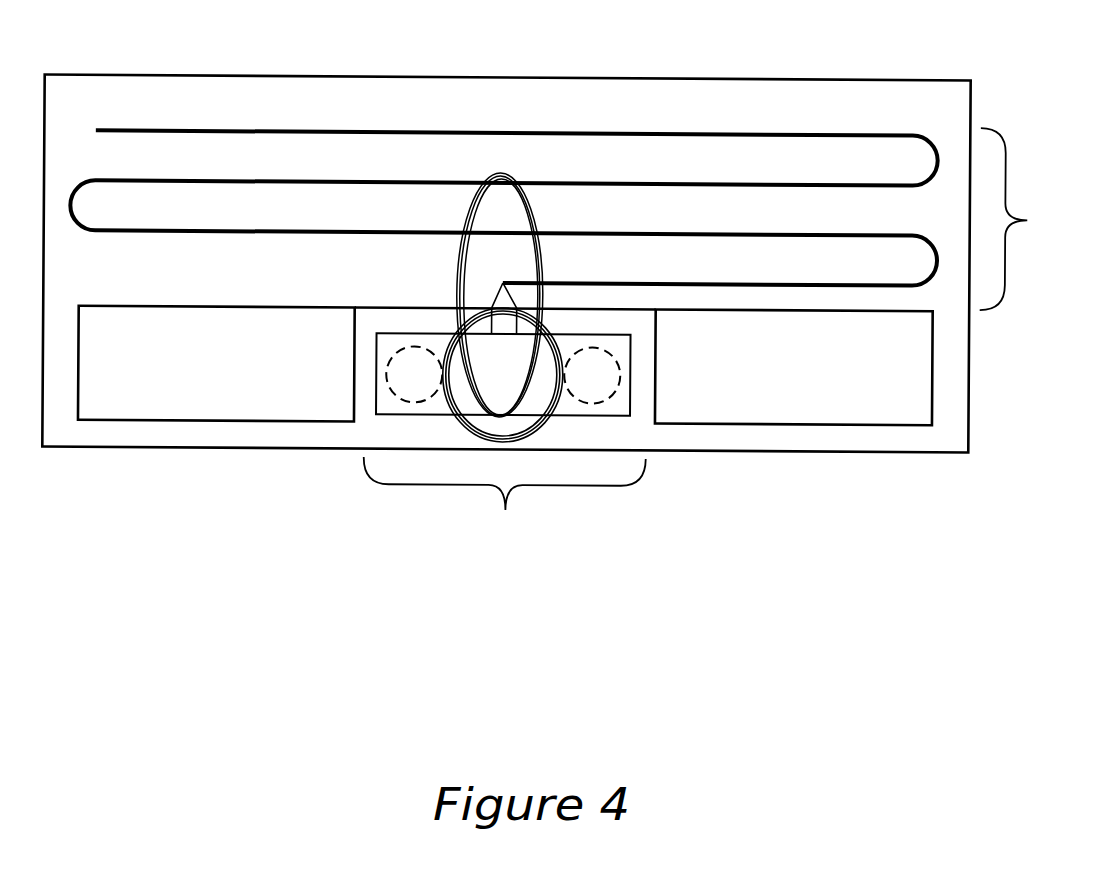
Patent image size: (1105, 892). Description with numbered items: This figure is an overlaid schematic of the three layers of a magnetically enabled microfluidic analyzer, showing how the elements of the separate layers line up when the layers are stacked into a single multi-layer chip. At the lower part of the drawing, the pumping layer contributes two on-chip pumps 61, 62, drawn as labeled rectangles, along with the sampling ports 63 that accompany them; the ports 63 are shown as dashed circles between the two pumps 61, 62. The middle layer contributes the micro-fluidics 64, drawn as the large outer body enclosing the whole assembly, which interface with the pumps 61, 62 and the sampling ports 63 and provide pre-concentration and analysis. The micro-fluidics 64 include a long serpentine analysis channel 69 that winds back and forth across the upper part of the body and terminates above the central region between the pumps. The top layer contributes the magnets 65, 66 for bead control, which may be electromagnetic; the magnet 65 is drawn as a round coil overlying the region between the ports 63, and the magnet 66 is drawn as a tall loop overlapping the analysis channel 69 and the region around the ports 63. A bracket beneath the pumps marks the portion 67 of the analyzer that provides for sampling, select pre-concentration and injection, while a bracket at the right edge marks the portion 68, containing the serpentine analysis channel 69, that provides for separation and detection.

The on-chip pump 61 is at (233, 411).
The on-chip pump 62 is at (810, 411).
The sampling ports 63 is at (393, 356).
The micro-fluidics 64 is at (922, 121).
The magnet 65 is at (540, 432).
The magnet 66 is at (460, 278).
The sampling portion 67 is at (504, 439).
The separation and detection portion 68 is at (1025, 219).
The analysis channel 69 is at (684, 130).